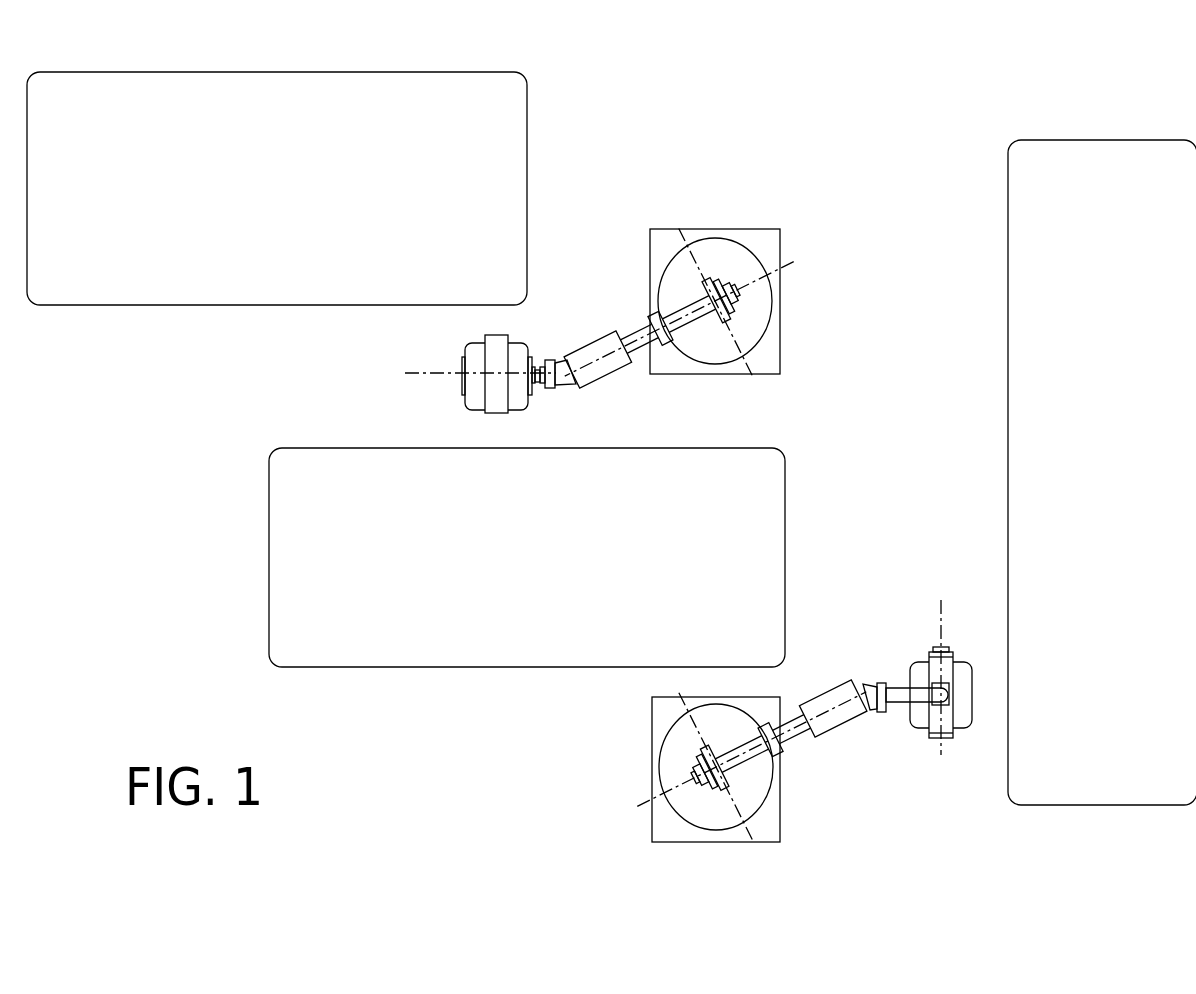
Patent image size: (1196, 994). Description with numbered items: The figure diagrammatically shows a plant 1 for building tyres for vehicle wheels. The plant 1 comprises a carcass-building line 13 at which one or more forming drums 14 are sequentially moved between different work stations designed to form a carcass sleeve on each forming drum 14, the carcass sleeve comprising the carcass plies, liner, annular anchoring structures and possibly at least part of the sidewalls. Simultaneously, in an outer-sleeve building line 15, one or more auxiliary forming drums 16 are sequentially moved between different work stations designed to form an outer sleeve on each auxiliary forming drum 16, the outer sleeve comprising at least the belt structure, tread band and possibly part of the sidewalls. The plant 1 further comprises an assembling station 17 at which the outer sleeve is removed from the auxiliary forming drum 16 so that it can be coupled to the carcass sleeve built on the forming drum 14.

The plant 1 is at (782, 178).
The carcass-building line 13 is at (1072, 187).
The forming drum 14 is at (908, 667).
The outer-sleeve building line 15 is at (455, 102).
The auxiliary forming drum 16 is at (468, 405).
The assembling station 17 is at (747, 490).